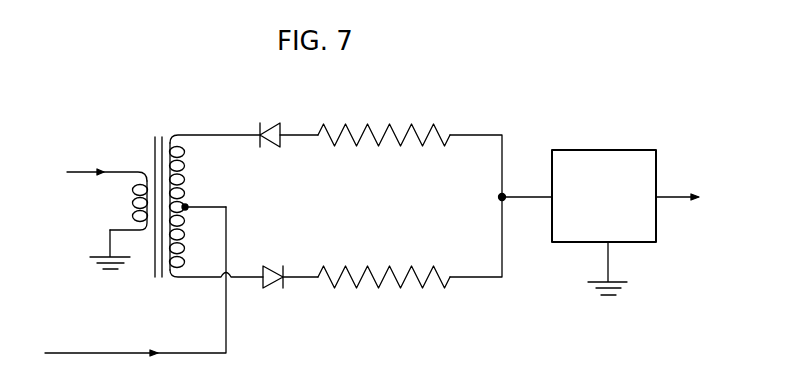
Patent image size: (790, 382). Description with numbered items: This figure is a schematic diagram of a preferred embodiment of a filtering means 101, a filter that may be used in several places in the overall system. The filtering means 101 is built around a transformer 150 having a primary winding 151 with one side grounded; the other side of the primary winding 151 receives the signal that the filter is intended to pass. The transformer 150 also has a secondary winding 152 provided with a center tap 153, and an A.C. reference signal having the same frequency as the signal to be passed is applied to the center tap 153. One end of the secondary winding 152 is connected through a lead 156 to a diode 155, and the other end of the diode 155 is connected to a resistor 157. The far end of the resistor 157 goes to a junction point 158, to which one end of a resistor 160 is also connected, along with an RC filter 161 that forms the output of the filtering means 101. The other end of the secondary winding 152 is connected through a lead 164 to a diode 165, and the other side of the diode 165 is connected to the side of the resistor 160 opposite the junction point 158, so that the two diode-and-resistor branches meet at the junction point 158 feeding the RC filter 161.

The filtering means 101 is at (56, 101).
The transformer 150 is at (156, 123).
The primary winding 151 is at (132, 187).
The secondary winding 152 is at (186, 183).
The center tap 153 is at (188, 206).
The diode 155 is at (265, 128).
The lead 156 is at (196, 135).
The resistor 157 is at (348, 125).
The junction point 158 is at (500, 197).
The resistor 160 is at (375, 270).
The RC filter 161 is at (620, 150).
The lead 164 is at (182, 280).
The diode 165 is at (273, 272).